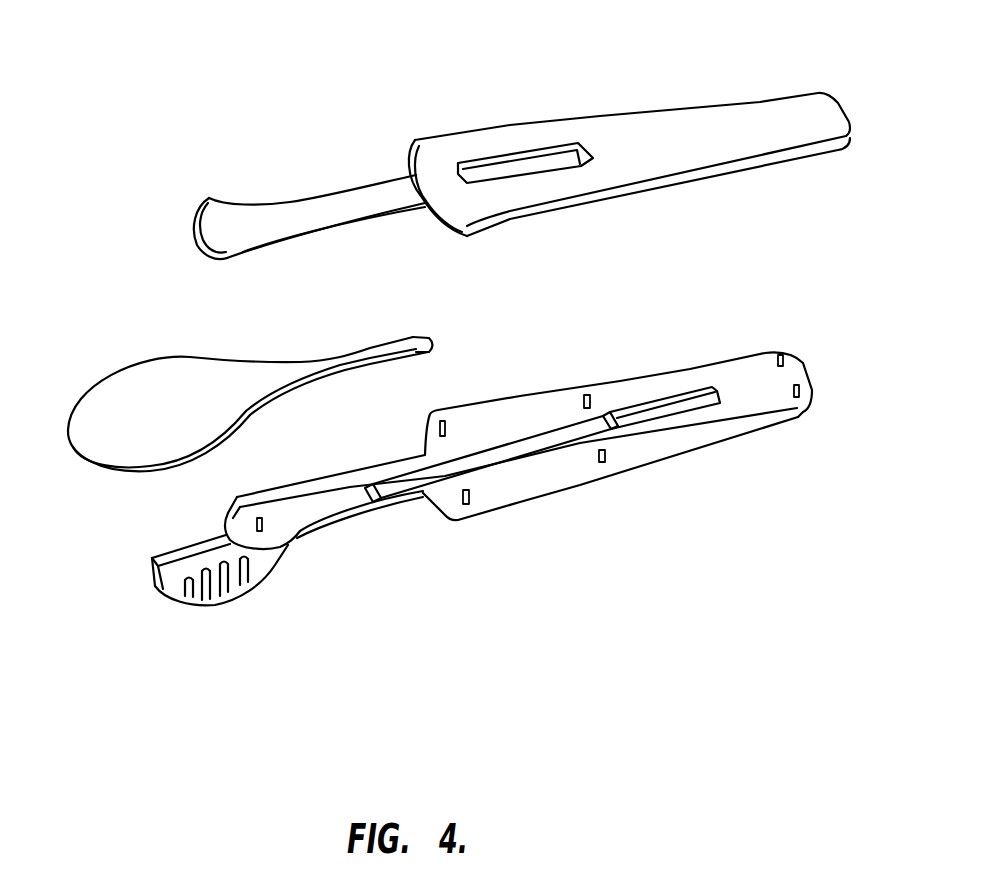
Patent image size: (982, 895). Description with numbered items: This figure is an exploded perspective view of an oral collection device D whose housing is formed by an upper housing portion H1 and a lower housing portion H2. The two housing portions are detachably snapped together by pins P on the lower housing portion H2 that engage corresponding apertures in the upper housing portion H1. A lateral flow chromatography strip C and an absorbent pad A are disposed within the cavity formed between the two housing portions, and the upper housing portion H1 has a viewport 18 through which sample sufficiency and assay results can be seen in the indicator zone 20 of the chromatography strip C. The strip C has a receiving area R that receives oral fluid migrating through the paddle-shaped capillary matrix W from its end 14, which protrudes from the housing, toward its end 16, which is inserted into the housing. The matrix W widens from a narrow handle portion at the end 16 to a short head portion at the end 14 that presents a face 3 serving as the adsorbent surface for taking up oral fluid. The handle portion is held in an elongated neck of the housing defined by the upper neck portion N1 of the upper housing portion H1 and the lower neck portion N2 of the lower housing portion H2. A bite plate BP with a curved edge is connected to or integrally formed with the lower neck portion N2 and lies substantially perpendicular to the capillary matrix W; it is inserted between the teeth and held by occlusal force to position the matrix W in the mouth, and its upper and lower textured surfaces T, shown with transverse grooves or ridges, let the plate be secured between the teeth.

The device D is at (797, 34).
The upper housing portion H1 is at (846, 116).
The viewport 18 is at (530, 157).
The upper neck portion N1 is at (278, 205).
The face 3 is at (248, 413).
The capillary matrix W is at (242, 372).
The end 14 is at (74, 446).
The end 16 is at (425, 337).
The lower housing portion H2 is at (812, 405).
The indicator zone 20 is at (567, 440).
The receiving area R is at (393, 483).
The absorbent pad A is at (700, 400).
The pins P is at (799, 391).
The lateral flow chromatography strip C is at (472, 476).
The lower neck portion N2 is at (333, 524).
The bite plate BP is at (160, 596).
The textured surface T is at (216, 586).